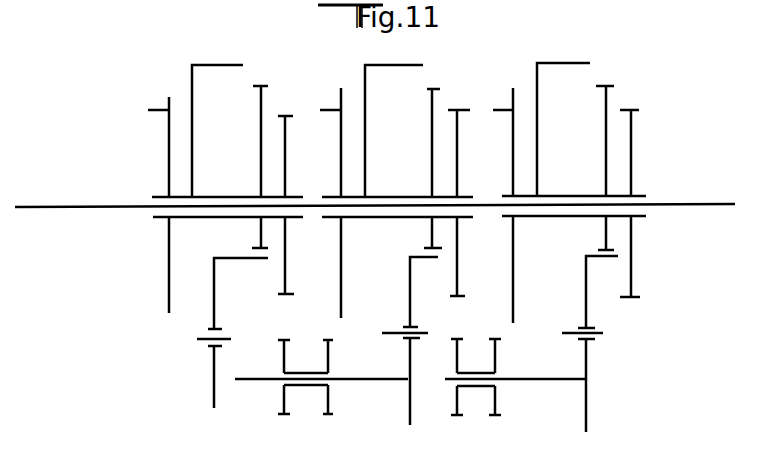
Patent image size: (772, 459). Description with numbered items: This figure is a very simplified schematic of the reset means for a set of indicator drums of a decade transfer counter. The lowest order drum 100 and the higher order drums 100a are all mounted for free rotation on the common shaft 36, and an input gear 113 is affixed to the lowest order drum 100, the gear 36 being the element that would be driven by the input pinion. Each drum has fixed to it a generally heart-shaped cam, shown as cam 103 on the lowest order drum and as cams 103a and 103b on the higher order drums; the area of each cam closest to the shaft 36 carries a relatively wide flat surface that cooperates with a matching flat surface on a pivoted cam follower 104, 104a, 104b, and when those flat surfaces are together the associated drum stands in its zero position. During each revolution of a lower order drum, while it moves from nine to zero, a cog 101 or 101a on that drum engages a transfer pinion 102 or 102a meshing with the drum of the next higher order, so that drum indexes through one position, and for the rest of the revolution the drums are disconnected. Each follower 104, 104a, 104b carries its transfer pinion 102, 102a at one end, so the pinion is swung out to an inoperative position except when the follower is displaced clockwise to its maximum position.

The shaft 36 is at (708, 204).
The drum 100 is at (566, 63).
The drum 100a is at (240, 64).
The cog 101 is at (505, 108).
The cog 101a is at (333, 98).
The transfer pinion 102 is at (497, 400).
The transfer pinion 102a is at (332, 402).
The cam 103 is at (606, 137).
The cam 103a is at (432, 138).
The cam 103b is at (261, 152).
The cam follower 104 is at (586, 286).
The cam follower 104a is at (409, 297).
The cam follower 104b is at (214, 300).
The input gear 113 is at (633, 266).